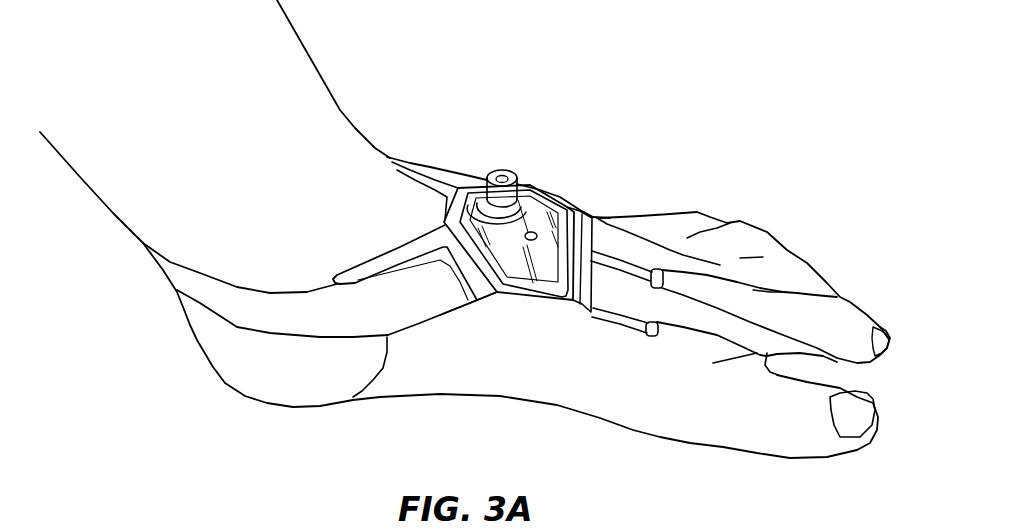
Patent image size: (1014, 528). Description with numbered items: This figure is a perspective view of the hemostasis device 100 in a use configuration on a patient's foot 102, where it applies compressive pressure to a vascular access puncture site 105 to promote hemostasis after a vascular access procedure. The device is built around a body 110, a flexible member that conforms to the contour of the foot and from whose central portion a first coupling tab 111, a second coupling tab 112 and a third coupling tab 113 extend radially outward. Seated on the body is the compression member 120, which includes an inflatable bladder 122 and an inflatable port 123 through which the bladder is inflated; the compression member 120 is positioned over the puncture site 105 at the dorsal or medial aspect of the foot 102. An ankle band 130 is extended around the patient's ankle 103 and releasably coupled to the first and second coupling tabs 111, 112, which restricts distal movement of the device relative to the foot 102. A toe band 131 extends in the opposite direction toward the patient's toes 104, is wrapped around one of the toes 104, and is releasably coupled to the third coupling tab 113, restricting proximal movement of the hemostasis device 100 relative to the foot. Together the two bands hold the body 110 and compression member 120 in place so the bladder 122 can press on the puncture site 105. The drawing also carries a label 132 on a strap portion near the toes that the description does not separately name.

The hemostasis device 100 is at (486, 272).
The patient's foot 102 is at (626, 320).
The patient's ankle 103 is at (228, 203).
The patient's toes 104 is at (780, 295).
The vascular access puncture site 105 is at (537, 176).
The body 110 is at (519, 276).
The first coupling tab 111 is at (407, 374).
The second coupling tab 112 is at (447, 139).
The third coupling tab 113 is at (636, 397).
The compression member 120 is at (508, 325).
The inflatable bladder 122 is at (514, 330).
The inflatable port 123 is at (502, 156).
The ankle band 130 is at (316, 232).
The toe band 131 is at (651, 215).
The finger band 132 is at (749, 236).